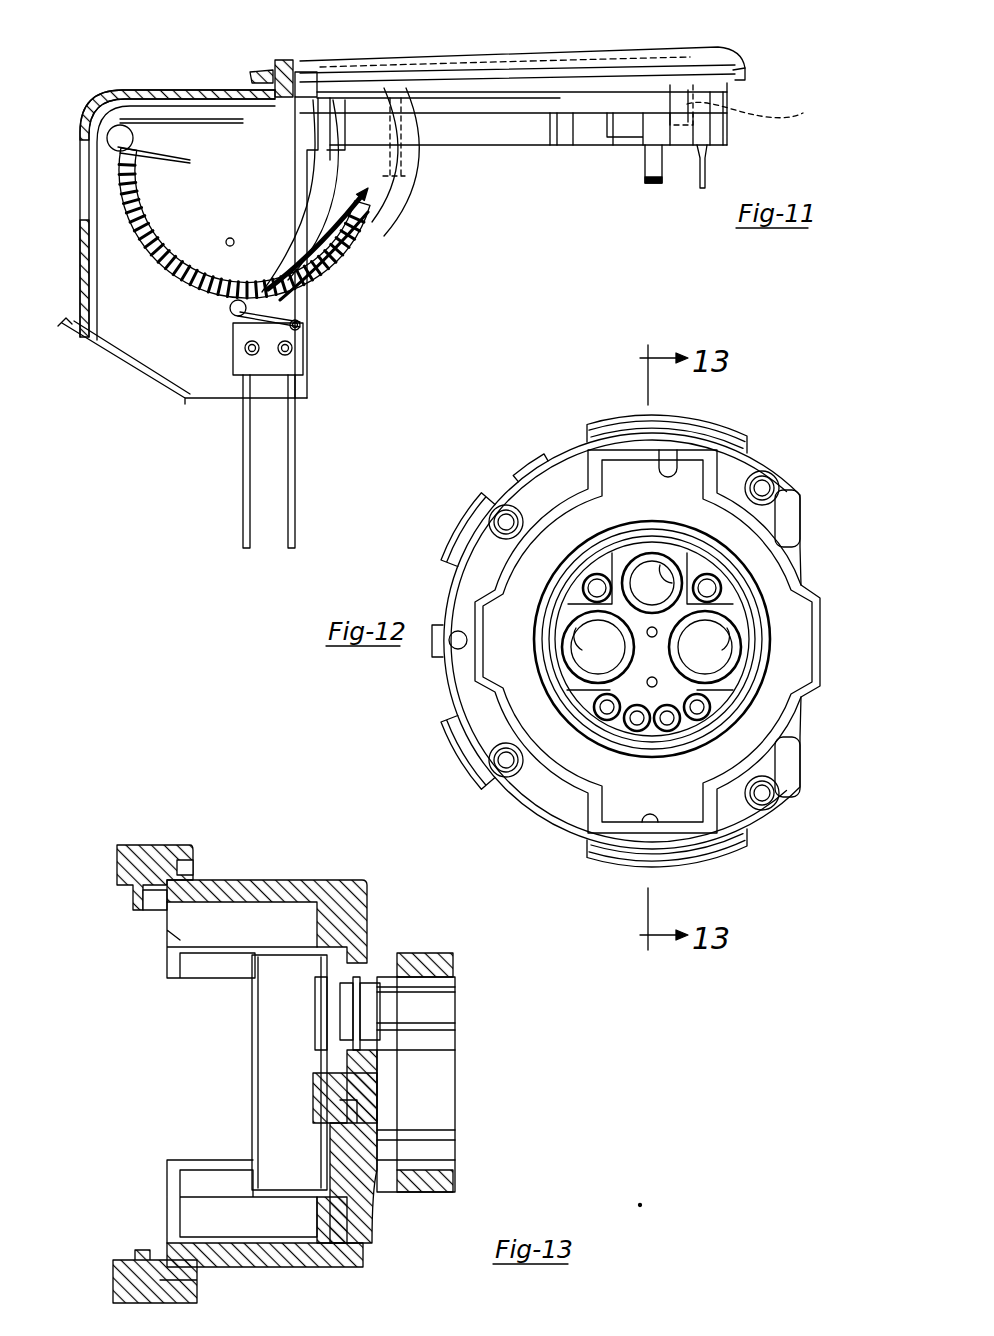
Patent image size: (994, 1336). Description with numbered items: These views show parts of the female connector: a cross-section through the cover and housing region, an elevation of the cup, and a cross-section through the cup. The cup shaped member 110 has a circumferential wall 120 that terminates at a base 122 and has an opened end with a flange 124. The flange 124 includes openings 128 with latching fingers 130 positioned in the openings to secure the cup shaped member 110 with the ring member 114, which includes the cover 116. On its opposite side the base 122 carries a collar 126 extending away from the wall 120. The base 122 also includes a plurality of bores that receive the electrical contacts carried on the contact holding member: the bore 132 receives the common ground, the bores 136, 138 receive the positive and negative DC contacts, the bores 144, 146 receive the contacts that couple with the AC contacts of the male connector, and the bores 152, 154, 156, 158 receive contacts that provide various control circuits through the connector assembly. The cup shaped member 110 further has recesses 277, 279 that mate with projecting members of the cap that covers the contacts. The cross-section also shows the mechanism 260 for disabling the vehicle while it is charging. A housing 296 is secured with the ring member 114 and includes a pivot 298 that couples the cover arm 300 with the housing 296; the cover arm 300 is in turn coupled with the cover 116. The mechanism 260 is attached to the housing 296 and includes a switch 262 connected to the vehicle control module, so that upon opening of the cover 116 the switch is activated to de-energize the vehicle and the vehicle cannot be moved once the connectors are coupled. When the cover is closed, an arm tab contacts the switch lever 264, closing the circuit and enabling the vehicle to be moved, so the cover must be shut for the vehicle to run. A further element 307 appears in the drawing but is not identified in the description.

In FIG. 12, the cup shaped member 110 is at (815, 800).
In FIG. 11, the ring member 114 is at (693, 30).
In FIG. 11, the cover 116 is at (746, 66).
In FIG. 12, the circumferential wall 120 is at (560, 706).
In FIG. 13, the circumferential wall 120 is at (230, 968).
In FIG. 12, the base 122 is at (568, 722).
In FIG. 13, the base 122 is at (372, 1188).
In FIG. 12, the flange 124 is at (472, 548).
In FIG. 13, the collar 126 is at (438, 962).
In FIG. 12, the openings 128 is at (490, 494).
In FIG. 11, the latching fingers 130 is at (404, 182).
In FIG. 12, the bore 132 is at (662, 580).
In FIG. 13, the bore 132 is at (365, 992).
In FIG. 12, the bore 136 is at (728, 652).
In FIG. 12, the bore 138 is at (590, 650).
In FIG. 12, the bore 144 is at (712, 590).
In FIG. 12, the bore 146 is at (585, 598).
In FIG. 12, the bore 152 is at (698, 712).
In FIG. 12, the bore 154 is at (668, 720).
In FIG. 12, the bore 156 is at (636, 720).
In FIG. 12, the bore 158 is at (605, 712).
In FIG. 11, the mechanism 260 is at (305, 343).
In FIG. 11, the switch 262 is at (245, 360).
In FIG. 11, the switch lever 264 is at (210, 288).
In FIG. 12, the recess 277 is at (650, 816).
In FIG. 12, the recess 279 is at (672, 470).
In FIG. 11, the housing 296 is at (200, 92).
In FIG. 11, the pivot 298 is at (120, 138).
In FIG. 11, the cover arm 300 is at (355, 240).
In FIG. 11, the spring 307 is at (764, 112).